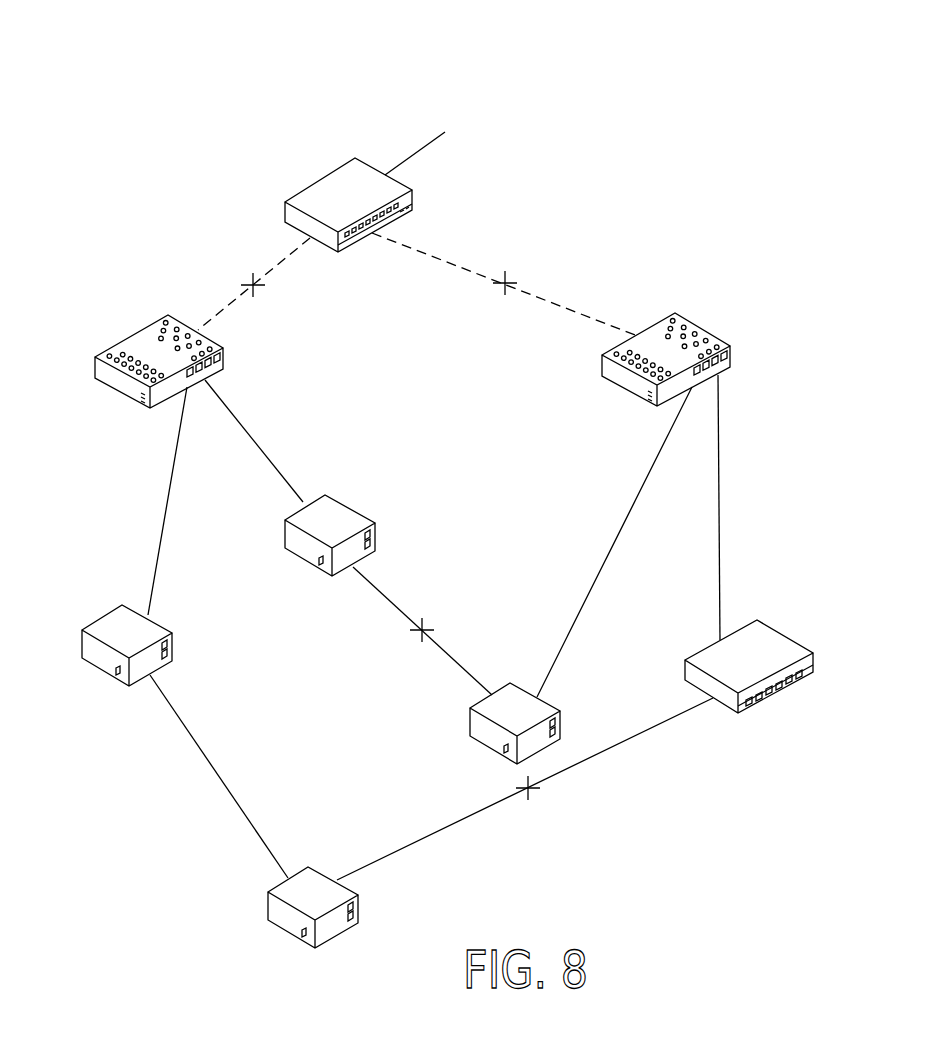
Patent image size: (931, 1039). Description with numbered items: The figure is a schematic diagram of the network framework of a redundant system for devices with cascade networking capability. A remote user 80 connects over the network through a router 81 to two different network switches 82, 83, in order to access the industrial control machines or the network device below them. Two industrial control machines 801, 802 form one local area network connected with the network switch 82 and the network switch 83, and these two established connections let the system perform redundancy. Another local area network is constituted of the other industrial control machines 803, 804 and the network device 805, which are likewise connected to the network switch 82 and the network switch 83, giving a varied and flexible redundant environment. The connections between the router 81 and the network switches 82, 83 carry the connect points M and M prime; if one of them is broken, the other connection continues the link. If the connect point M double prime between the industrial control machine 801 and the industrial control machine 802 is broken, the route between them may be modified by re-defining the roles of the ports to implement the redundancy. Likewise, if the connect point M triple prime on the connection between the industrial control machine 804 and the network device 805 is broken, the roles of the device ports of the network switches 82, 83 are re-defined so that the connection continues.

The remote user 80 is at (565, 102).
The router 81 is at (328, 187).
The network switch 82 is at (140, 340).
The network switch 83 is at (660, 338).
The industrial control machine 801 is at (343, 513).
The industrial control machine 802 is at (512, 697).
The industrial control machine 803 is at (113, 667).
The industrial control machine 804 is at (310, 883).
The network device 805 is at (773, 638).